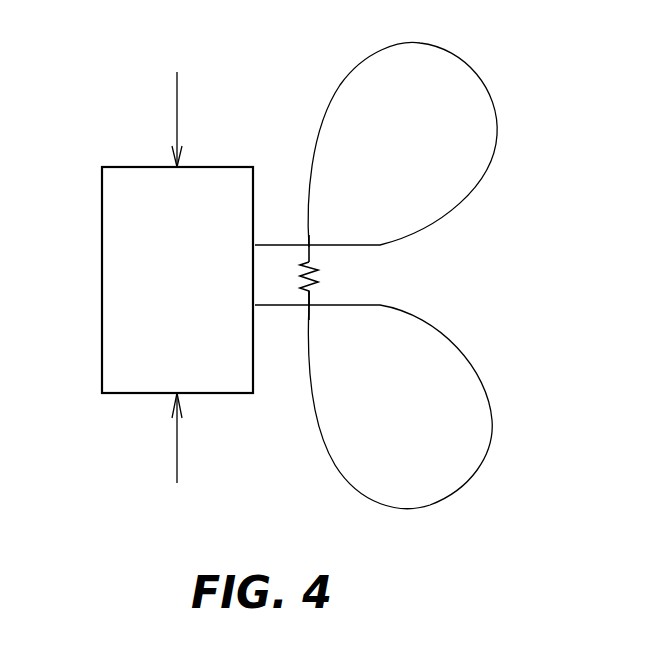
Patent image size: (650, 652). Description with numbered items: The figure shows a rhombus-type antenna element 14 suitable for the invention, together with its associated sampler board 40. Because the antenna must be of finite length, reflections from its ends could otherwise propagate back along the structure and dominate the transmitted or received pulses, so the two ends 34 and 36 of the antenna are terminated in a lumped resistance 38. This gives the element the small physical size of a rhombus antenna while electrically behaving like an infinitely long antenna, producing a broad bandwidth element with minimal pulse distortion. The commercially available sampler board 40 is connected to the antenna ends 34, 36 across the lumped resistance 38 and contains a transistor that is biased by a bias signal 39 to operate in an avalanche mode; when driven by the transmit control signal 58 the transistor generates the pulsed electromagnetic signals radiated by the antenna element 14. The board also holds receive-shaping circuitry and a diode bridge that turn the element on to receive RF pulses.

The antenna element 14 is at (511, 130).
The end of the antenna 34 is at (309, 242).
The end of the antenna 36 is at (310, 310).
The lumped resistance 38 is at (318, 268).
The bias signal 39 is at (177, 92).
The sampler board 40 is at (102, 245).
The transmit control signal 58 is at (177, 448).